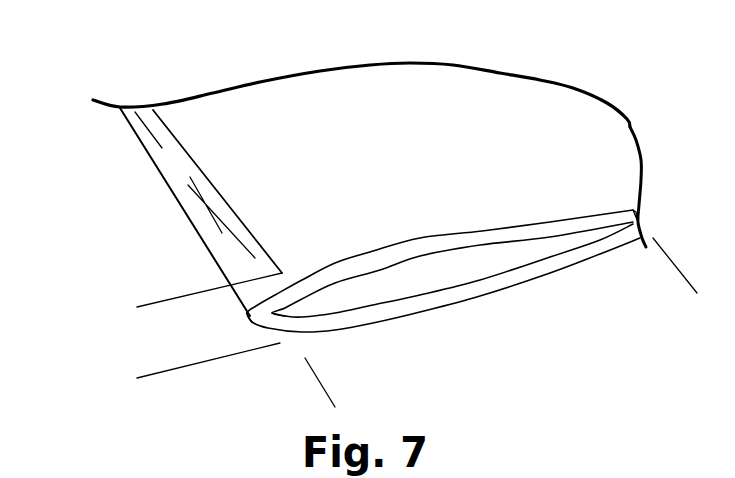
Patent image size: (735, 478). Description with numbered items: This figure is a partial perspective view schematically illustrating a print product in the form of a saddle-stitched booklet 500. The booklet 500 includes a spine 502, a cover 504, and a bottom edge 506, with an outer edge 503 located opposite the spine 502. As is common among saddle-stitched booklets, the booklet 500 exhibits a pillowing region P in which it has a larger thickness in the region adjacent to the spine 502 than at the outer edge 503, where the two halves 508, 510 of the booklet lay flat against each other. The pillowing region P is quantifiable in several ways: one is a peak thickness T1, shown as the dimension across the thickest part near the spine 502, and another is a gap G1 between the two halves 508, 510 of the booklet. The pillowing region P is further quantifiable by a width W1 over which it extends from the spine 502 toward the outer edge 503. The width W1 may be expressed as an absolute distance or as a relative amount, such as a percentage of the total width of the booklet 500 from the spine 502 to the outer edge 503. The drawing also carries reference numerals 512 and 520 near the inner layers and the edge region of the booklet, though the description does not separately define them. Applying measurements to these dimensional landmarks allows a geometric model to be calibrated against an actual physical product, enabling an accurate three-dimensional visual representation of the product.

The saddle-stitched booklet 500 is at (590, 92).
The spine 502 is at (138, 142).
The outer edge 503 is at (630, 127).
The cover 504 is at (425, 164).
The bottom edge 506 is at (550, 218).
The first half of the booklet 508 is at (567, 258).
The second half of the booklet 510 is at (482, 233).
The lower inner wall 512 is at (508, 256).
The tip 520 is at (636, 210).
The peak thickness T1 is at (145, 314).
The pillowing region P is at (303, 339).
The gap G1 is at (392, 272).
The width W1 is at (687, 288).